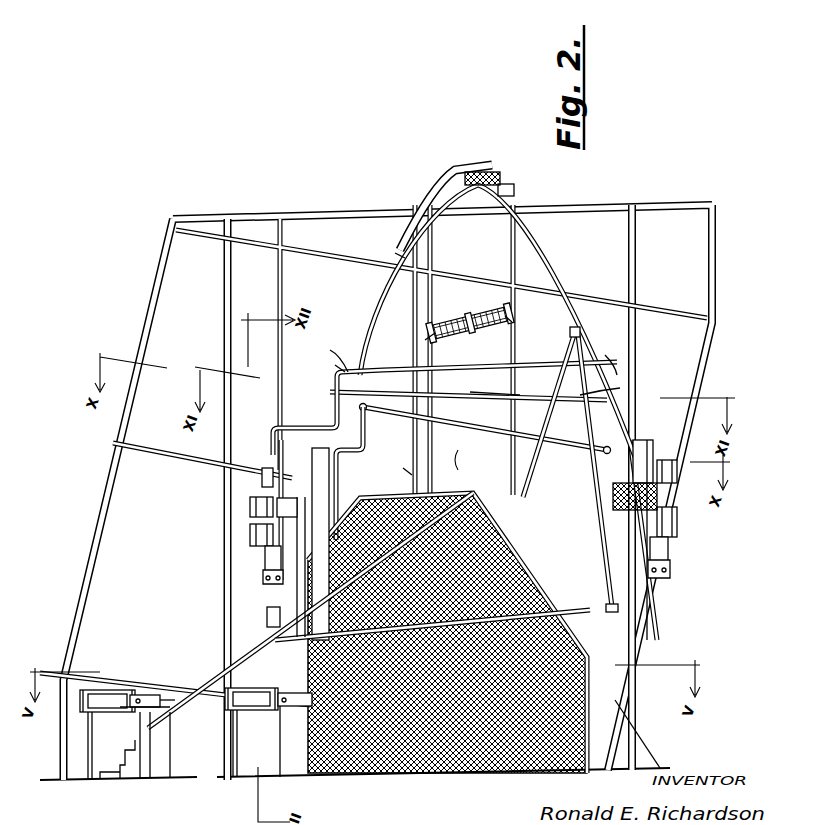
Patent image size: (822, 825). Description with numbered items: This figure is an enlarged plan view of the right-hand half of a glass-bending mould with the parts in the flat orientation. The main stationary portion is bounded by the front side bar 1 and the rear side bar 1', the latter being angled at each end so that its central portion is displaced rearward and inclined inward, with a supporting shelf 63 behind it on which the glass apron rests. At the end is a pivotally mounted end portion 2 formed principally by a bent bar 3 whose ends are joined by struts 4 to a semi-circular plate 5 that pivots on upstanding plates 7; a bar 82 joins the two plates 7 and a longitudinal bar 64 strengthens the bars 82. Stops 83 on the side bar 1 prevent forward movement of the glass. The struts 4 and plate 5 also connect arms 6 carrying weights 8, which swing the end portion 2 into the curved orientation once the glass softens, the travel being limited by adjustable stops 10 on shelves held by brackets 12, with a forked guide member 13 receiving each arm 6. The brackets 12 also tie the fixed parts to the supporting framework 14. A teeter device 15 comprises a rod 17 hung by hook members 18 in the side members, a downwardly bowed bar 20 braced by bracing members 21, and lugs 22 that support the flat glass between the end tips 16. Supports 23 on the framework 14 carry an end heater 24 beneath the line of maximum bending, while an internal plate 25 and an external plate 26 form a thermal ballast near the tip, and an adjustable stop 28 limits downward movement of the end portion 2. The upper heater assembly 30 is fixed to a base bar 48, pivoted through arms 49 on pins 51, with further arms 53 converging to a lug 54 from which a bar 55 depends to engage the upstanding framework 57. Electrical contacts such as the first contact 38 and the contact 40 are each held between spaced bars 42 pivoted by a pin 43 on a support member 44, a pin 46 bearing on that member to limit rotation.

The side bar 1 is at (639, 734).
The side bar 1' is at (349, 473).
The end portion 2 is at (540, 240).
The bent bar 3 is at (440, 195).
The struts 4 is at (617, 372).
The semi-circular plate 5 is at (337, 390).
The arms 6 is at (266, 468).
The upstanding plates 7 is at (633, 445).
The weights 8 is at (250, 535).
The adjustable stops 10 is at (268, 585).
The brackets 12 is at (630, 485).
The forked guide member 13 is at (263, 574).
The supporting framework 14 is at (252, 225).
The teeter device 15 is at (464, 459).
The end tips 16 is at (476, 172).
The rod 17 is at (483, 397).
The hook members 18 is at (368, 412).
The bowed bar 20 is at (592, 440).
The bracing members 21 is at (540, 396).
The lug 22 is at (572, 328).
The supports 23 is at (425, 340).
The heater 24 is at (458, 322).
The internal plate 25 is at (405, 225).
The external plate 26 is at (452, 166).
The adjustable stop 28 is at (506, 185).
The upper heater assembly 30 is at (540, 600).
The first contact 38 is at (155, 705).
The contact 40 is at (290, 693).
The spaced bars 42 is at (90, 690).
The pin 43 is at (100, 695).
The support member 44 is at (105, 712).
The pin 46 is at (205, 685).
The base bar 48 is at (280, 755).
The arms 49 is at (267, 615).
The pins 51 is at (420, 622).
The arms 53 is at (170, 700).
The lug 54 is at (116, 745).
The bar 55 is at (110, 779).
The upstanding framework 57 is at (150, 780).
The supporting shelf 63 is at (320, 448).
The longitudinal bar 64 is at (398, 461).
The bar 82 is at (504, 396).
The stops 83 is at (587, 391).